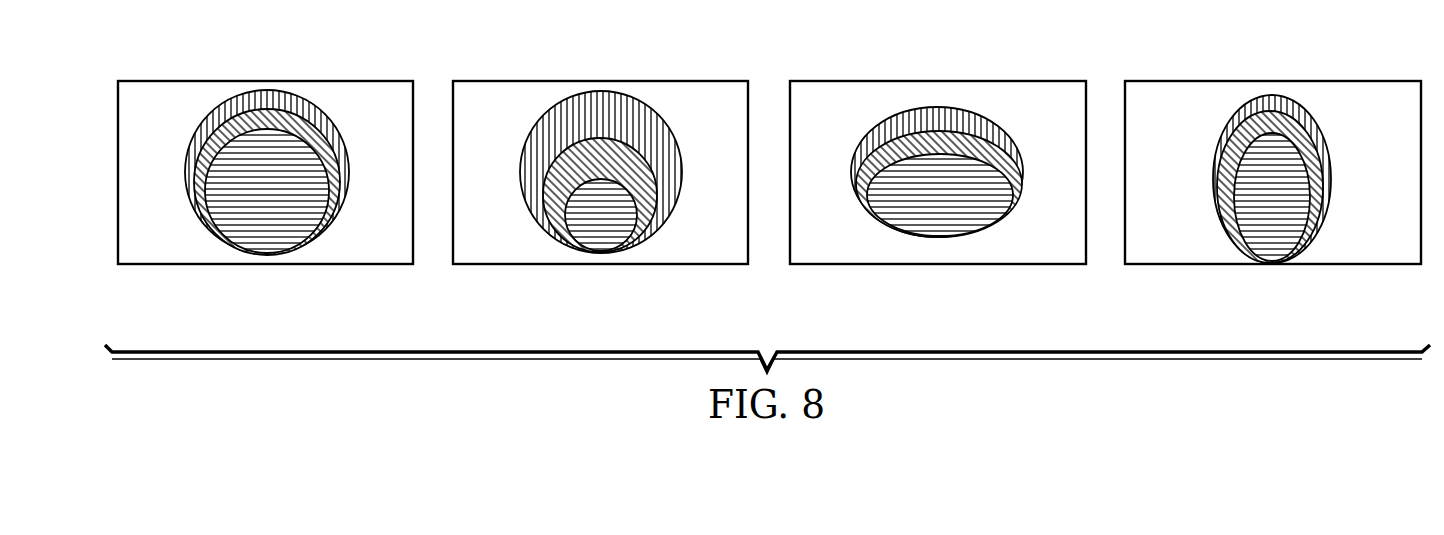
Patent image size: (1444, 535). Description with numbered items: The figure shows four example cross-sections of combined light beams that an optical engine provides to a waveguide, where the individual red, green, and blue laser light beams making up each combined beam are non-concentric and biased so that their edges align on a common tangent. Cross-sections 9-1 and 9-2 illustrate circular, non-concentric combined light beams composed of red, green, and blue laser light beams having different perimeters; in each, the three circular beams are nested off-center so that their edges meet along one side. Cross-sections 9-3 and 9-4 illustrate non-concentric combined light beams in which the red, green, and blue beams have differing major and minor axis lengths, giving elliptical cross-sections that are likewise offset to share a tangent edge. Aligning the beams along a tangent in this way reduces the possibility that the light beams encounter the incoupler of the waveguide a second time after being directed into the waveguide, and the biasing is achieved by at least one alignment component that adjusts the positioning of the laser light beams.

The cross-section 9-1 is at (219, 78).
The cross-section 9-2 is at (553, 78).
The cross-section 9-3 is at (985, 78).
The cross-section 9-4 is at (1322, 78).